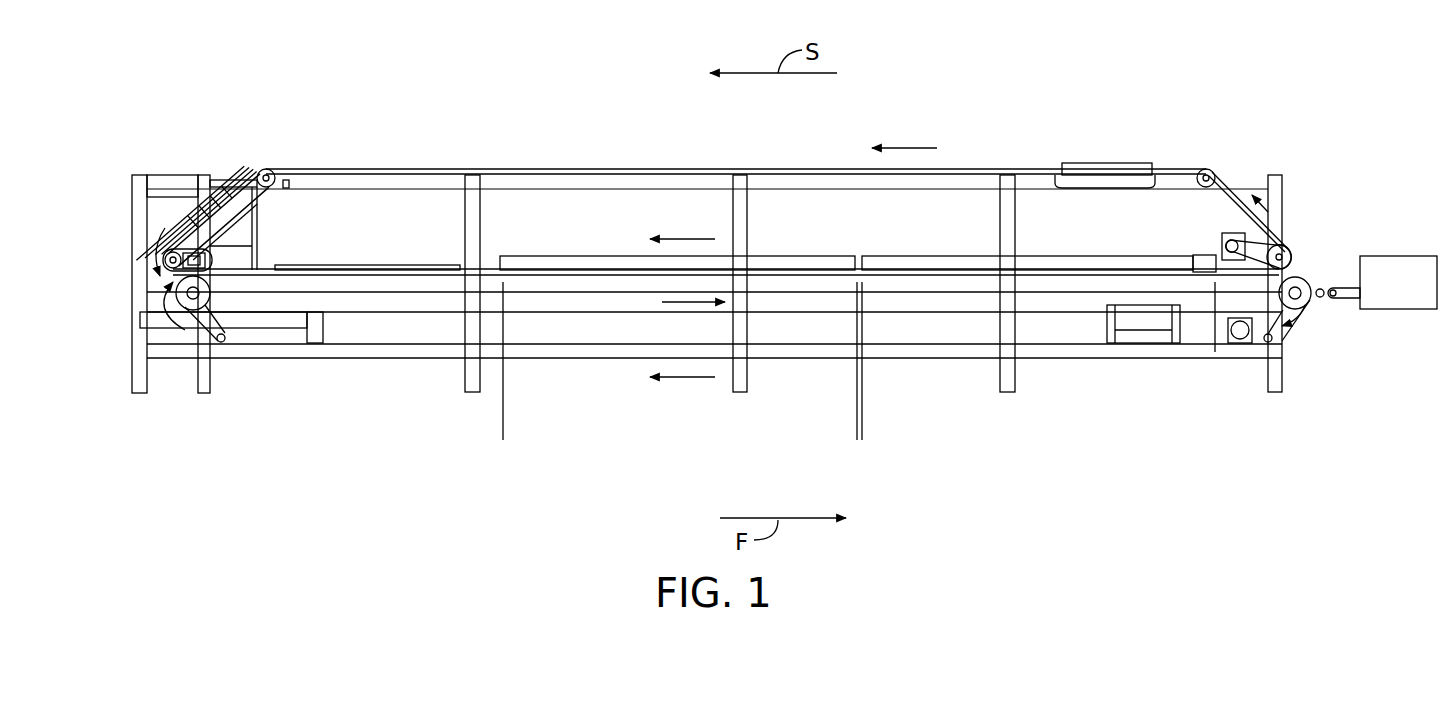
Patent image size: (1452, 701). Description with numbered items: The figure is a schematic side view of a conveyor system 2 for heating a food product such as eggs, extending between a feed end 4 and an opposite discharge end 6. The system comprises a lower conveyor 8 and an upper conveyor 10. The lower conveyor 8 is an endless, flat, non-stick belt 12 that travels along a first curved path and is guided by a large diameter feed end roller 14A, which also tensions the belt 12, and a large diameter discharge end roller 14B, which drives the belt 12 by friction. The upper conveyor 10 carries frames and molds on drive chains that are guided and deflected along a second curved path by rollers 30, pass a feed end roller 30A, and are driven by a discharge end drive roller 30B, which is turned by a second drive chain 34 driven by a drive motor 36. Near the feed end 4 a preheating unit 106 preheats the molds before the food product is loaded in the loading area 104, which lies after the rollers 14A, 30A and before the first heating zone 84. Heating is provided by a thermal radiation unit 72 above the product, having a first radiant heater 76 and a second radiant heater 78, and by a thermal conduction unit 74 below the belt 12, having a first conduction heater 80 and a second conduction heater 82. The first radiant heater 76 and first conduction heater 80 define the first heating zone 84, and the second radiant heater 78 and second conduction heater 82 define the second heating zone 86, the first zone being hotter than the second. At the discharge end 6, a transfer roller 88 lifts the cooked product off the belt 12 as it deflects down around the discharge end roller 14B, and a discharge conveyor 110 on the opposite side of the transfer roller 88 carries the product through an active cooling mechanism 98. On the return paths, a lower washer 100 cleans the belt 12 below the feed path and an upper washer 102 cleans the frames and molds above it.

The conveyor system 2 is at (1157, 76).
The feed end 4 is at (98, 280).
The discharge end 6 is at (1375, 238).
The lower conveyor 8 is at (118, 287).
The upper conveyor 10 is at (118, 175).
The belt 12 is at (210, 333).
The feed end roller 14A is at (200, 300).
The discharge end roller 14B is at (1278, 305).
The rollers 30 is at (264, 176).
The feed end roller 30A is at (172, 252).
The discharge end drive roller 30B is at (1300, 265).
The second drive chain 34 is at (1280, 247).
The drive motor 36 is at (1222, 240).
The thermal radiation unit 72 is at (910, 207).
The thermal conduction unit 74 is at (831, 380).
The first radiant heater 76 is at (783, 258).
The second radiant heater 78 is at (878, 258).
The first conduction heater 80 is at (824, 285).
The second conduction heater 82 is at (934, 285).
The first heating zone 84 is at (855, 441).
The second heating zone 86 is at (1213, 441).
The transfer roller 88 is at (1322, 290).
The active cooling mechanism 98 is at (1390, 280).
The lower washer 100 is at (1140, 322).
The upper washer 102 is at (1107, 163).
The loading area 104 is at (470, 163).
The preheating unit 106 is at (203, 250).
The discharge conveyor 110 is at (1341, 298).